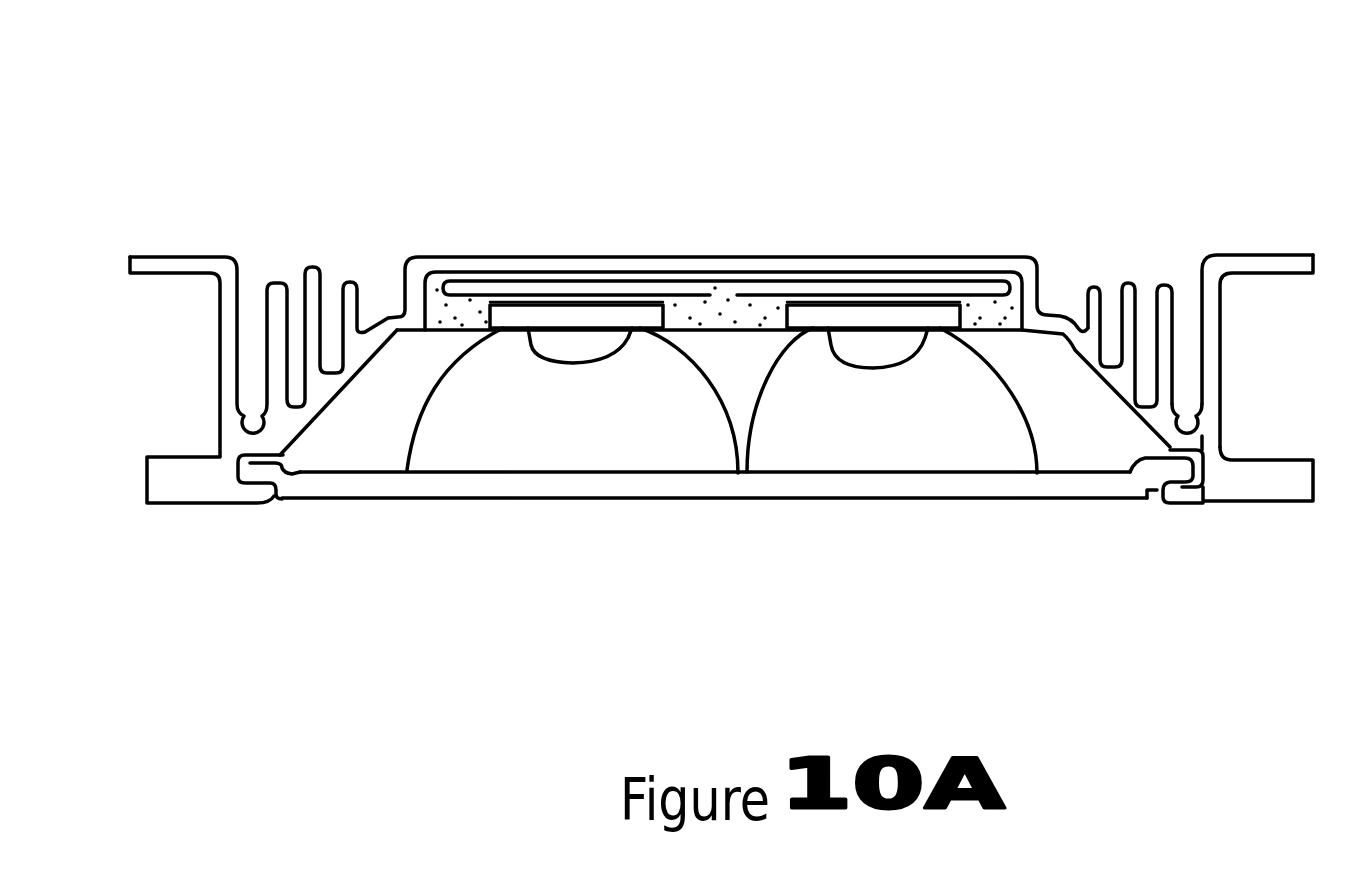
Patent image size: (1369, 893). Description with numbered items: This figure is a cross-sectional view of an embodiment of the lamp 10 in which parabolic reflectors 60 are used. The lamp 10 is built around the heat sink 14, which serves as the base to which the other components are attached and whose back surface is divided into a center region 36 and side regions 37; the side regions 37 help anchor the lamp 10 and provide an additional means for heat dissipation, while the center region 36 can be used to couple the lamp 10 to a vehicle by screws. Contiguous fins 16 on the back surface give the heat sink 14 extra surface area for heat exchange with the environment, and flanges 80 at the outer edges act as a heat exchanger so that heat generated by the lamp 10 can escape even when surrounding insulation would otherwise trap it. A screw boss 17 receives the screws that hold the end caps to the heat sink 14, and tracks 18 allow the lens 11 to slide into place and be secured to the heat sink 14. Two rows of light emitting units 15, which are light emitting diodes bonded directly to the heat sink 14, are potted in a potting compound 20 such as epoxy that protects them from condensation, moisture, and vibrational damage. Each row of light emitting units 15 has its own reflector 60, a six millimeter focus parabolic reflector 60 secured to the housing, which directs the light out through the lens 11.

The lamp 10 is at (280, 114).
The lens 11 is at (506, 486).
The heat sink 14 is at (453, 268).
The light emitting units 15 is at (607, 320).
The fins 16 is at (1085, 292).
The screw boss 17 is at (1196, 414).
The tracks 18 is at (1190, 478).
The potting compound 20 is at (1036, 262).
The center region 36 is at (862, 255).
The side regions 37 is at (1258, 255).
The parabolic reflectors 60 is at (410, 433).
The flanges 80 is at (166, 487).